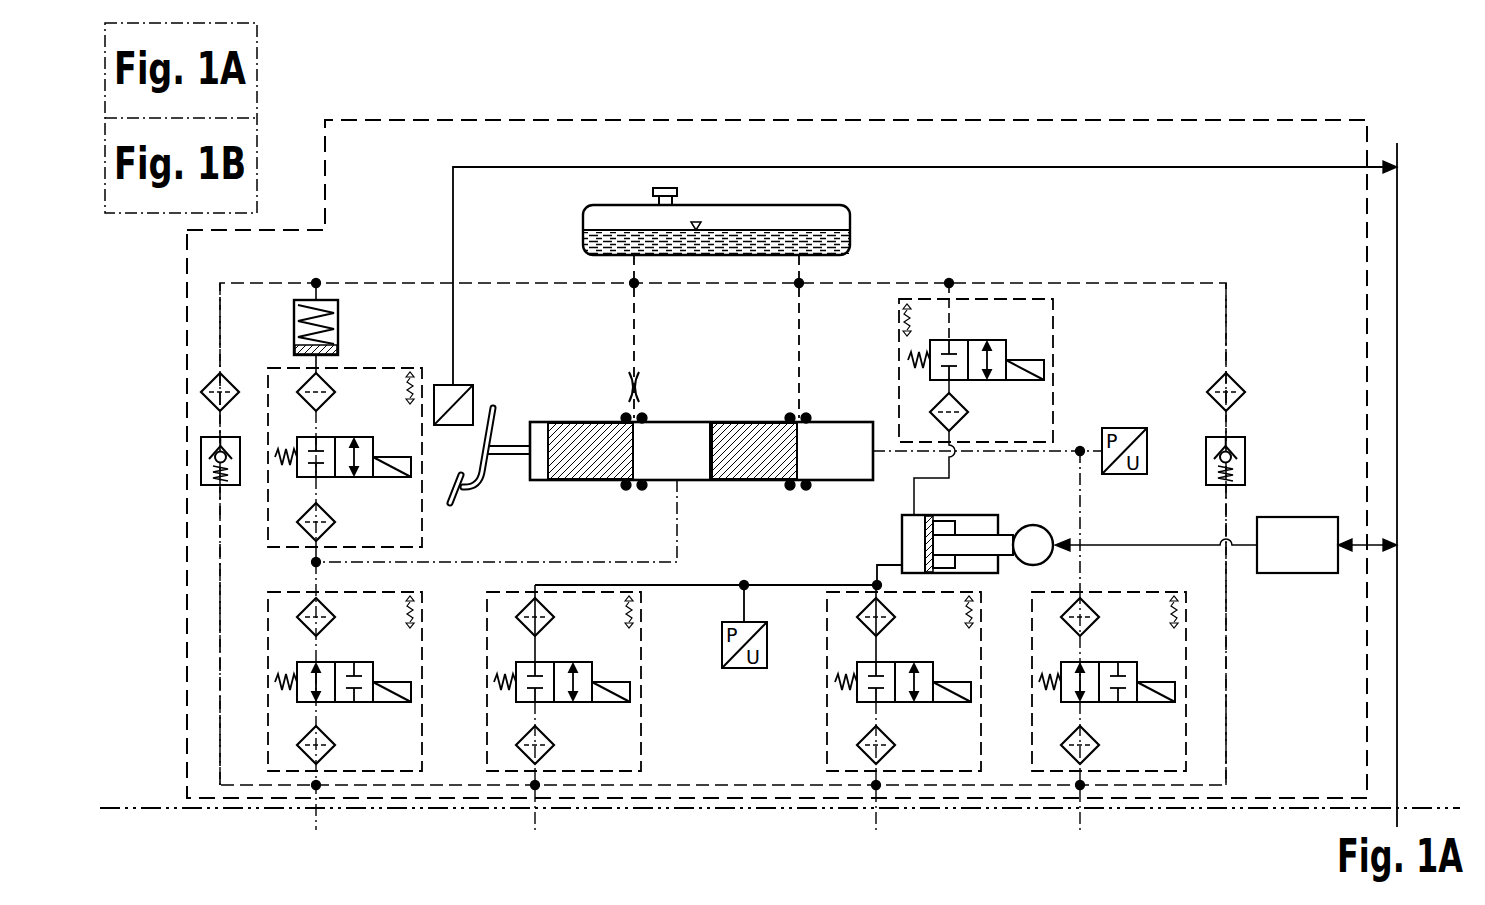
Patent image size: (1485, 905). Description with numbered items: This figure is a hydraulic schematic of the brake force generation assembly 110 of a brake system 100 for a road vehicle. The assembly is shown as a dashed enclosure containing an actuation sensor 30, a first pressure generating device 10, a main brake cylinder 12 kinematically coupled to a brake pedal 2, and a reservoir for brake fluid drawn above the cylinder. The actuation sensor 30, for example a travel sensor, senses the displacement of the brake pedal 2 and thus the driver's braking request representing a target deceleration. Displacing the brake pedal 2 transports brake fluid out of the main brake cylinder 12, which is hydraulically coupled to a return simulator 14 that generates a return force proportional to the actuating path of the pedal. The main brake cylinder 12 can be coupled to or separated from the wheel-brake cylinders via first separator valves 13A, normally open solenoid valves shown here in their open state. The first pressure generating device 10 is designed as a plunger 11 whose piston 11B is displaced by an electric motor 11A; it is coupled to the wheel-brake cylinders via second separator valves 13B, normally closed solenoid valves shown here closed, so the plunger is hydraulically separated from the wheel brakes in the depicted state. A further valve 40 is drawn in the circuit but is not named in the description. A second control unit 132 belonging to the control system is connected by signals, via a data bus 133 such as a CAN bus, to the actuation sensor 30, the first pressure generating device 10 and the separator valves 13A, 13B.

The brake system 100 is at (1380, 100).
The brake force generation assembly 110 is at (187, 524).
The return simulator 14 is at (286, 310).
The actuation sensor 30 is at (473, 395).
The main brake cylinder 12 is at (692, 421).
The brake pedal 2 is at (480, 492).
The first pressure generating device 10 is at (1005, 591).
The plunger 11 is at (1010, 506).
The electric motor 11A is at (1043, 527).
The piston 11B is at (930, 534).
The valve 40 is at (1022, 419).
The first separator valves 13A is at (410, 751).
The second separator valves 13B is at (629, 751).
The second control unit 132 is at (1322, 562).
The data bus 133 is at (1399, 637).